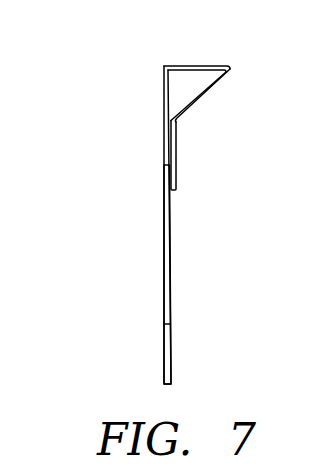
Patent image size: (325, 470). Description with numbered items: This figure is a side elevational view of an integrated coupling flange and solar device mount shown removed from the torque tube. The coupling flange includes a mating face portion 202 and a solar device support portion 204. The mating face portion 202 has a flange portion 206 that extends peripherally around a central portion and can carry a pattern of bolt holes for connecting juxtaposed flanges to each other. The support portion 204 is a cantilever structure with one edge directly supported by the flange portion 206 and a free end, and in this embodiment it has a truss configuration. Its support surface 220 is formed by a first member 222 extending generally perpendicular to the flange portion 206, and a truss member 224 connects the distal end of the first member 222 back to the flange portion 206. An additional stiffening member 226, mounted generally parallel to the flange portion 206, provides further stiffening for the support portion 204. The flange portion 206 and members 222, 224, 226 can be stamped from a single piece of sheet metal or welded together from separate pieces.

The mating face portion 202 is at (106, 308).
The solar device support portion 204 is at (159, 83).
The flange portion 206 is at (164, 148).
The support surface 220 is at (214, 66).
The first member 222 is at (183, 56).
The truss member 224 is at (209, 103).
The stiffening member 226 is at (181, 172).